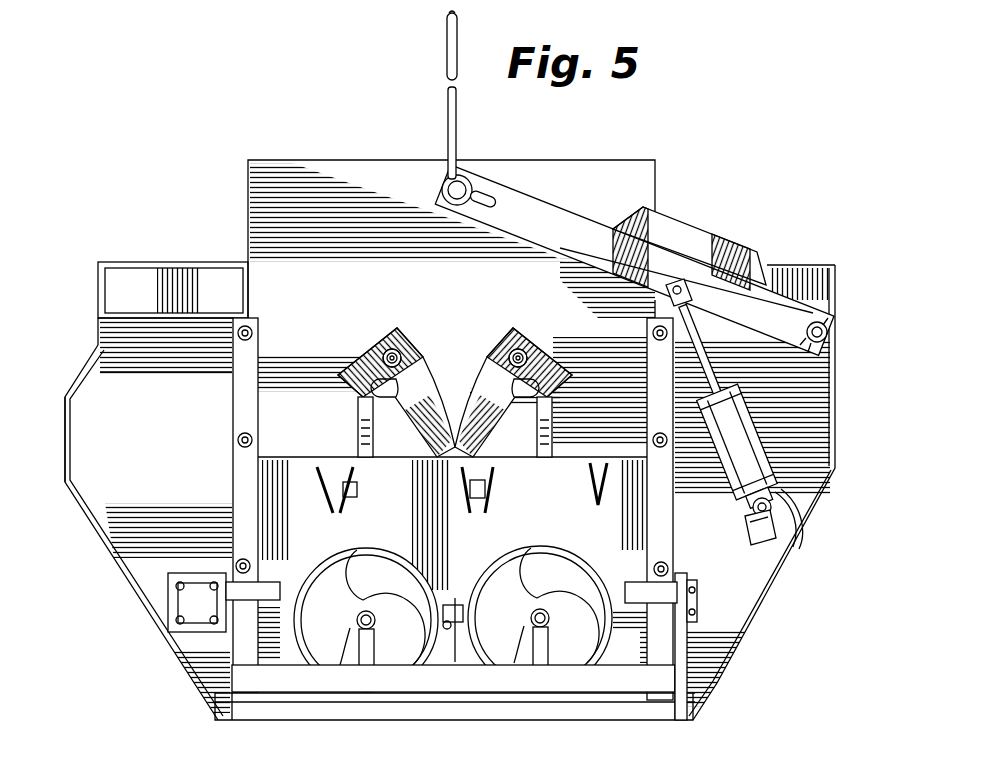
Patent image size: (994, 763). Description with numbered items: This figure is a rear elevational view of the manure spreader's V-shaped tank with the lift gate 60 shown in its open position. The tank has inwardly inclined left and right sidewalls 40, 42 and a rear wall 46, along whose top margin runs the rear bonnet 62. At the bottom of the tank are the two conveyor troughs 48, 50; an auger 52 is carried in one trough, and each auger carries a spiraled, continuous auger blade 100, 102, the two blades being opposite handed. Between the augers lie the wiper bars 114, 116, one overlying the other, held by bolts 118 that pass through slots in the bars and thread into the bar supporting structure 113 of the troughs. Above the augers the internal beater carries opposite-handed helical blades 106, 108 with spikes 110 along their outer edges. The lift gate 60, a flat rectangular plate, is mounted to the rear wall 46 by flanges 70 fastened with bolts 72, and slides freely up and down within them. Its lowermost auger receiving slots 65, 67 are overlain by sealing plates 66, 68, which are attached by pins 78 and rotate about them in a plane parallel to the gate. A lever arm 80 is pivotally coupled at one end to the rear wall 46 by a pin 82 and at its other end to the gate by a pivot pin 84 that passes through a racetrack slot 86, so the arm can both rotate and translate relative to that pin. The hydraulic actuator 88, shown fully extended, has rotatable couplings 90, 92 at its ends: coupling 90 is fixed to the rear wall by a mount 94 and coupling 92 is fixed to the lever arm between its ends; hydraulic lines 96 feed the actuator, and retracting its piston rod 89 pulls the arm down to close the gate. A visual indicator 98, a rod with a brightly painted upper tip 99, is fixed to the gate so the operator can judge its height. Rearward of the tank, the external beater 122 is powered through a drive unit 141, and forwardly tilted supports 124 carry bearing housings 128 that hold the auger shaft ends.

The upper tip 99 is at (447, 23).
The visual indicator 98 is at (447, 55).
The pivot pin 84 is at (440, 185).
The racetrack slot 86 is at (490, 202).
The lever arm 80 is at (670, 262).
The rotatable coupling 92 is at (713, 270).
The pin 82 is at (817, 318).
The lift gate 60 is at (263, 226).
The rear bonnet 62 is at (130, 262).
The rear wall 46 is at (115, 338).
The flanges 70 is at (247, 397).
The right sidewall 42 is at (777, 607).
The bolts 72 is at (240, 443).
The pins 78 is at (503, 353).
The sealing plate 66 is at (357, 365).
The sealing plate 68 is at (560, 353).
The auger receiving slot 65 is at (357, 412).
The auger receiving slot 67 is at (550, 445).
The piston rod 89 is at (708, 364).
The hydraulic actuator 88 is at (733, 436).
The hydraulic lines 96 is at (793, 500).
The rotatable coupling 90 is at (772, 507).
The mount 94 is at (762, 542).
The helical blade 106 is at (322, 468).
The spikes 110 is at (340, 502).
The bolts 118 is at (452, 500).
The helical blade 108 is at (593, 467).
The auger blade 100 is at (372, 640).
The bearing housings 128 is at (387, 633).
The supports 124 is at (362, 646).
The wiper bar 114 is at (450, 603).
The wiper bar 116 is at (457, 643).
The bar supporting structure 113 is at (475, 655).
The conveyor trough 48 is at (295, 650).
The auger 52 is at (283, 687).
The conveyor trough 50 is at (668, 718).
The auger blade 102 is at (615, 687).
The external beater 122 is at (717, 683).
The left sidewall 40 is at (230, 593).
The drive unit 141 is at (190, 607).